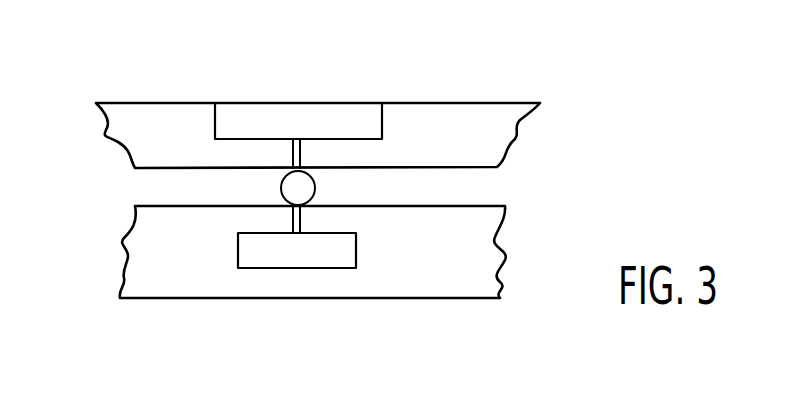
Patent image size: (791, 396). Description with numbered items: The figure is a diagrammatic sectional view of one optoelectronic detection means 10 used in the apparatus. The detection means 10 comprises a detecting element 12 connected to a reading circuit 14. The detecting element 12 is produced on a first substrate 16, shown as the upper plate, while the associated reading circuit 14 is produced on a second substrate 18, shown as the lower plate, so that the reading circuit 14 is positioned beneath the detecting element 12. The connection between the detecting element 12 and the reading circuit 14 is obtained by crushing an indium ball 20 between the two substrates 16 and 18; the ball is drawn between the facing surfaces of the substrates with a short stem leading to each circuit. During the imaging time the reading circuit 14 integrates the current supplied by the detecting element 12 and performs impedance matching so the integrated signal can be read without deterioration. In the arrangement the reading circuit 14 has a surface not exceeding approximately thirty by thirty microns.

The optoelectronic detection means 10 is at (530, 171).
The detecting element 12 is at (250, 112).
The reading circuit 14 is at (250, 252).
The first substrate 16 is at (138, 117).
The second substrate 18 is at (152, 280).
The indium ball 20 is at (302, 190).